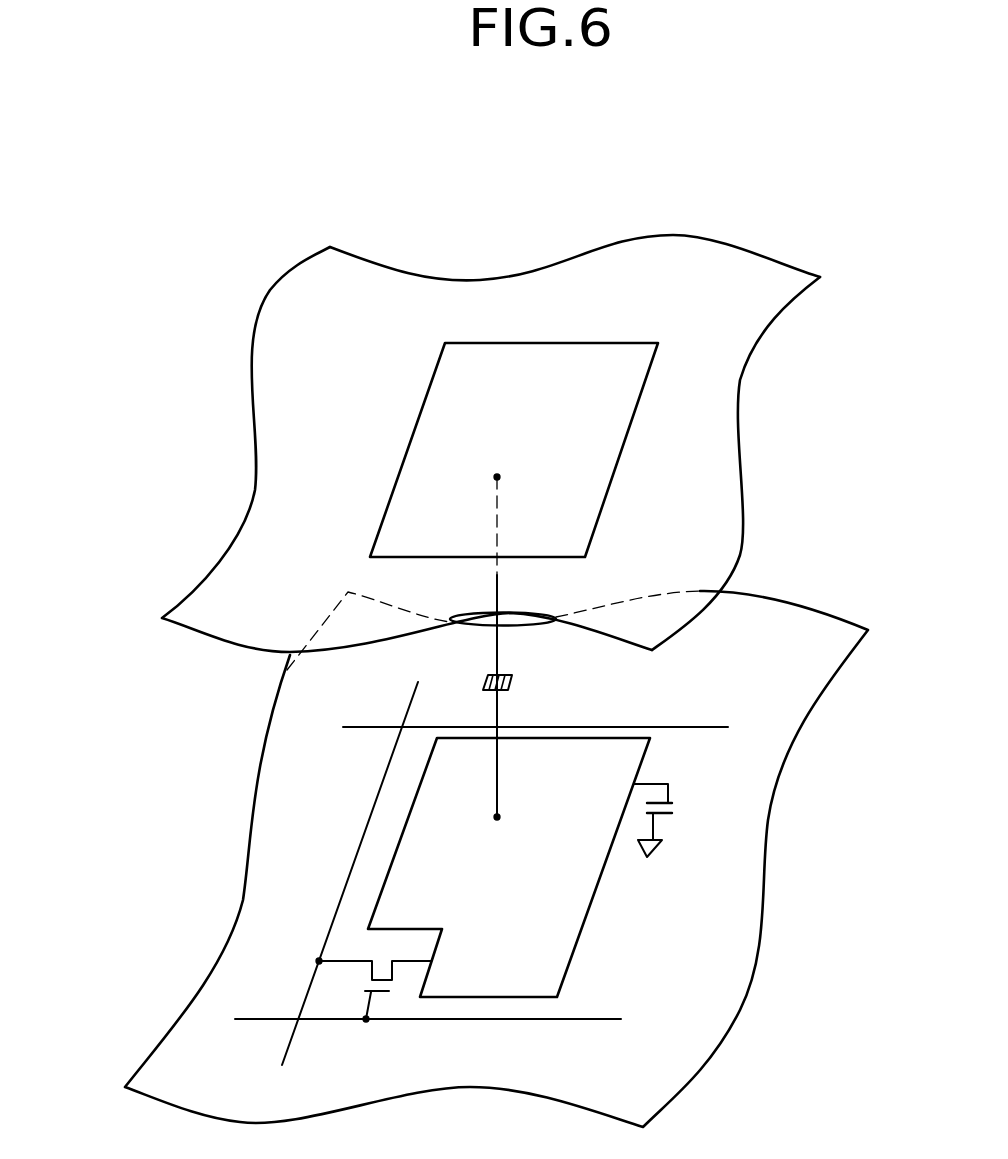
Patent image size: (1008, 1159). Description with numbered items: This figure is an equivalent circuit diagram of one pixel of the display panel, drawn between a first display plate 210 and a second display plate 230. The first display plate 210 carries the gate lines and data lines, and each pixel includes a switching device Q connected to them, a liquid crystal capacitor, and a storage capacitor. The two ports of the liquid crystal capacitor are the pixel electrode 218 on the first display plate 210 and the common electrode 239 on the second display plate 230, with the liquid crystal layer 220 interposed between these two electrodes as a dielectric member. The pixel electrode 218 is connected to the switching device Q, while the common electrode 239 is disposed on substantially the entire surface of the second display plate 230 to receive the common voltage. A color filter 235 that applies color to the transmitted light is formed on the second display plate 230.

The first display plate 210 is at (772, 832).
The pixel electrode 218 is at (583, 927).
The liquid crystal layer 220 is at (160, 743).
The second display plate 230 is at (748, 478).
The color filter 235 is at (615, 468).
The common electrode 239 is at (740, 413).